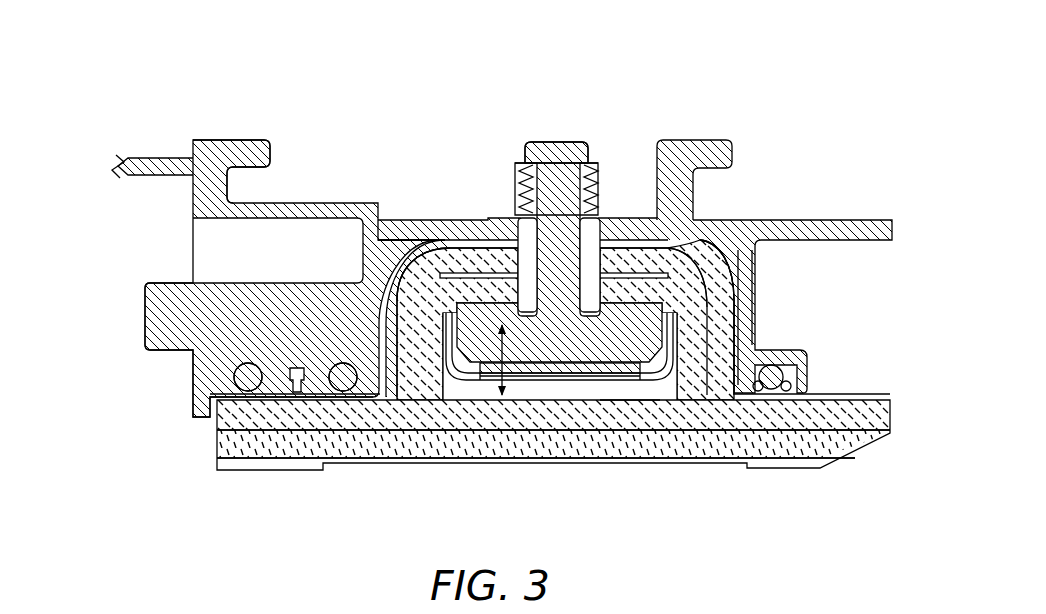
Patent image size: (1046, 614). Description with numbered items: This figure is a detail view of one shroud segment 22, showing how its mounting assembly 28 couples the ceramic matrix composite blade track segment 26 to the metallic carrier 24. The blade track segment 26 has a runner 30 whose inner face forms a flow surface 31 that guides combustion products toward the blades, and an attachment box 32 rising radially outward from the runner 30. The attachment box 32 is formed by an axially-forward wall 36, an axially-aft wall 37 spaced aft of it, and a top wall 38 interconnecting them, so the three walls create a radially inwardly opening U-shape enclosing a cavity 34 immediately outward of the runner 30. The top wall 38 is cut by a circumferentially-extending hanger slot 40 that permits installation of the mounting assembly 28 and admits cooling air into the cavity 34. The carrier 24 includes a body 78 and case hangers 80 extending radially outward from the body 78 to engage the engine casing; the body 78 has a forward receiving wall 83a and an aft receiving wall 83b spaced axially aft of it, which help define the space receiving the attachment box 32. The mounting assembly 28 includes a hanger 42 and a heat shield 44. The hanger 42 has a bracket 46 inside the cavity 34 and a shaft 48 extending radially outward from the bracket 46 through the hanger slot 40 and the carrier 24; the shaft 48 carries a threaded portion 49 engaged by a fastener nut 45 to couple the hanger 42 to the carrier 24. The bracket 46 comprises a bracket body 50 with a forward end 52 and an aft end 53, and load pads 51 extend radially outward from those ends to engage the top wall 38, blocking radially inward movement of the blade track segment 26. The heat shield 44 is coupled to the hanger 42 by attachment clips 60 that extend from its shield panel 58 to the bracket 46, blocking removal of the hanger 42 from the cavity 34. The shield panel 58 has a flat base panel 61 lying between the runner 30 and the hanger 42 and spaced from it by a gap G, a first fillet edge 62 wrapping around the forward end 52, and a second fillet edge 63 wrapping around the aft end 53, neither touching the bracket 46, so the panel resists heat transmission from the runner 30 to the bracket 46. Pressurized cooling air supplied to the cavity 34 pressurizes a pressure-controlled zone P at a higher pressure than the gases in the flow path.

The shroud segment 22 is at (137, 120).
The carrier 24 is at (828, 212).
The blade track segment 26 is at (803, 485).
The mounting assembly 28 is at (507, 178).
The runner 30 is at (623, 472).
The flow surface 31 is at (577, 463).
The attachment box 32 is at (750, 314).
The cavity 34 is at (477, 398).
The axially-forward wall 36 is at (376, 325).
The axially-aft wall 37 is at (738, 316).
The top wall 38 is at (620, 248).
The circumferentially-extending hanger slot 40 is at (513, 226).
The hanger 42 is at (593, 139).
The heat shield 44 is at (503, 528).
The fastener nut 45 is at (516, 210).
The bracket 46 is at (702, 302).
The shaft 48 is at (521, 256).
The threaded portion 49 is at (602, 210).
The bracket body 50 is at (631, 400).
The load pads 51 is at (413, 297).
The forward end 52 is at (447, 355).
The aft end 53 is at (680, 280).
The shield panel 58 is at (635, 365).
The attachment clips 60 is at (513, 398).
The flat base panel 61 is at (561, 365).
The first fillet edge 62 is at (448, 404).
The second fillet edge 63 is at (682, 320).
The body 78 is at (295, 198).
The case hangers 80 is at (221, 137).
The forward receiving wall 83a is at (140, 336).
The aft receiving wall 83b is at (762, 300).
The gap G is at (425, 240).
The pressure-controlled zone P is at (496, 398).